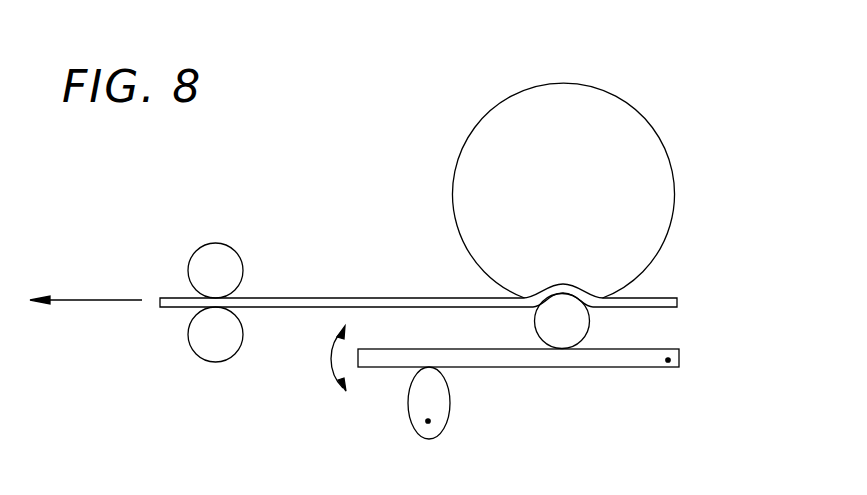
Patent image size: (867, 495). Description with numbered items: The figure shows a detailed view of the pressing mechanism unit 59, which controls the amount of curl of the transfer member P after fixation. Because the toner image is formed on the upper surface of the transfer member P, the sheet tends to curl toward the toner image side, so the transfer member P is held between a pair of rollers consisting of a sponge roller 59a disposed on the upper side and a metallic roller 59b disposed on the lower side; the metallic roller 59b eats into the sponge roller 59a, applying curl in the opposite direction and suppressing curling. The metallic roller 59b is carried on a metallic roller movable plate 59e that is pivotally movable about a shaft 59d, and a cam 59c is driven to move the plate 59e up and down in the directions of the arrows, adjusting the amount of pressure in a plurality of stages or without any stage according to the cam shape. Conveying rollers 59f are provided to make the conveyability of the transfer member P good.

The pressing mechanism unit 59 is at (415, 141).
The sponge roller 59a is at (633, 104).
The metallic roller 59b is at (591, 326).
The cam 59c is at (451, 410).
The shaft 59d is at (668, 364).
The metallic roller movable plate 59e is at (553, 368).
The conveying rollers 59f is at (236, 252).
The transfer member P is at (352, 297).